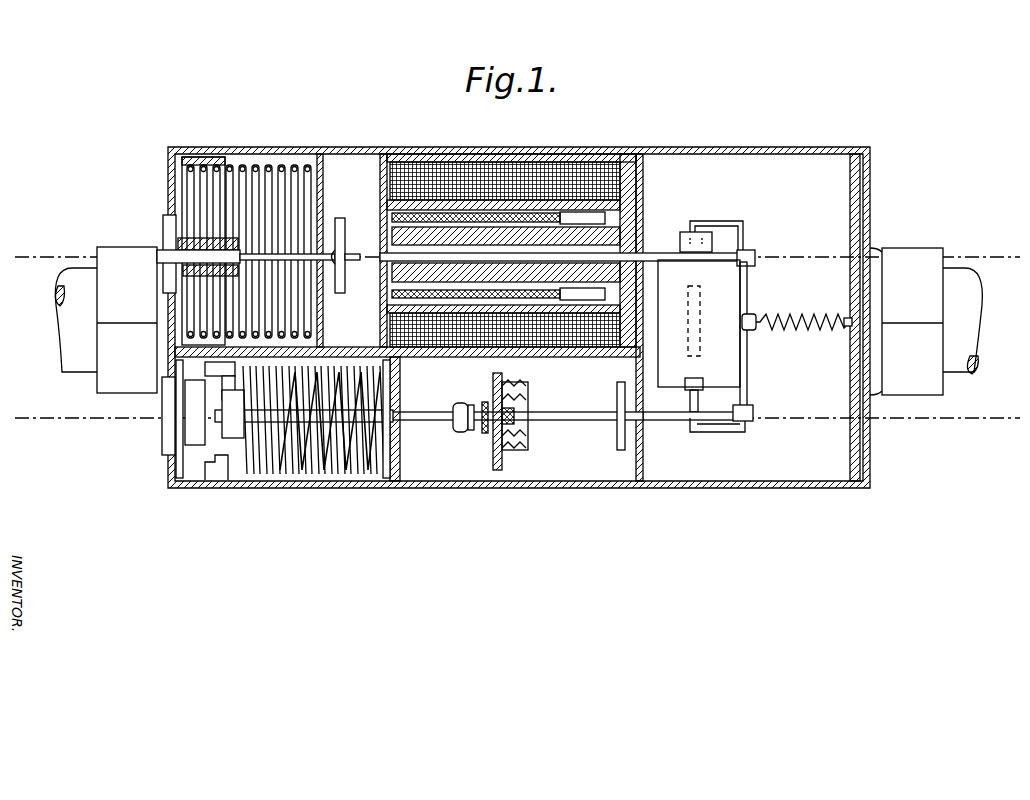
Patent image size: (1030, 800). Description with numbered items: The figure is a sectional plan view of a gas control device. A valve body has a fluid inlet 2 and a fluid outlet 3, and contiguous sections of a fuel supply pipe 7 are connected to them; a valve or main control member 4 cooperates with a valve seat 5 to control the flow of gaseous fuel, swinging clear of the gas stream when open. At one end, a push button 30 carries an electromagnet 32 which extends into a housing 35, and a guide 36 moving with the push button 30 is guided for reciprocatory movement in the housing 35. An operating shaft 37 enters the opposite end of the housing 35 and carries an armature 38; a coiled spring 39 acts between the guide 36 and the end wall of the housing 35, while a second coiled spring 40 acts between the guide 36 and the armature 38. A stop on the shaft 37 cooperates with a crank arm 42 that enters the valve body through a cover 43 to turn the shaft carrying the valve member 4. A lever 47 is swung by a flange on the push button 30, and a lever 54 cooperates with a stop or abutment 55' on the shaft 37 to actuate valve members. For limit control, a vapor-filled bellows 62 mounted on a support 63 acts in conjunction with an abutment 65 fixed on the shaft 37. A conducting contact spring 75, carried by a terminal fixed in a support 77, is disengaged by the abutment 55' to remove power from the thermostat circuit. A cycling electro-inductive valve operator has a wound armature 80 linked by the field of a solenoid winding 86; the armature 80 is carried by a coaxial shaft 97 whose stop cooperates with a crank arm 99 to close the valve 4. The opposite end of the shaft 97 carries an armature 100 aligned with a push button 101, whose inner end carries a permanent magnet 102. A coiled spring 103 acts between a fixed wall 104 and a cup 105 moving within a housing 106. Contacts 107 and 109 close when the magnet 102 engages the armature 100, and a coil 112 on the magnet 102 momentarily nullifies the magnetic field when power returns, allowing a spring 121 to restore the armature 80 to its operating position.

The fluid inlet 2 is at (905, 268).
The fluid outlet 3 is at (127, 248).
The valve or main control member 4 is at (46, 405).
The valve seat 5 is at (14, 327).
The fuel supply pipe 7 is at (952, 372).
The push button 30 is at (163, 448).
The electromagnet 32 is at (226, 392).
The housing 35 is at (290, 480).
The guide 36 is at (210, 466).
The operating shaft 37 is at (664, 420).
The armature 38 is at (388, 406).
The coiled spring 39 is at (334, 331).
The second coiled spring 40 is at (350, 352).
The crank arm 42 is at (722, 434).
The cover 43 is at (776, 266).
The lever 47 is at (203, 380).
The lever 54 is at (460, 432).
The stop or abutment 55' is at (466, 436).
The vapor-filled bellows 62 is at (516, 446).
The support 63 is at (500, 470).
The member or abutment 65 is at (618, 446).
The conducting contact spring 75 is at (484, 400).
The support 77 is at (385, 476).
The wound armature 80 is at (562, 152).
The solenoid winding 86 is at (502, 152).
The coaxial shaft 97 is at (642, 253).
The crank arm 99 is at (724, 220).
The armature 100 is at (346, 283).
The push button 101 is at (168, 215).
The permanent magnet 102 is at (178, 246).
The coiled spring 103 is at (200, 316).
The fixed wall 104 is at (315, 182).
The cup 105 is at (182, 170).
The housing 106 is at (358, 158).
The electrical contact 107 is at (240, 254).
The electrical contact 109 is at (345, 250).
The coil 112 is at (200, 232).
The spring 121 is at (798, 316).